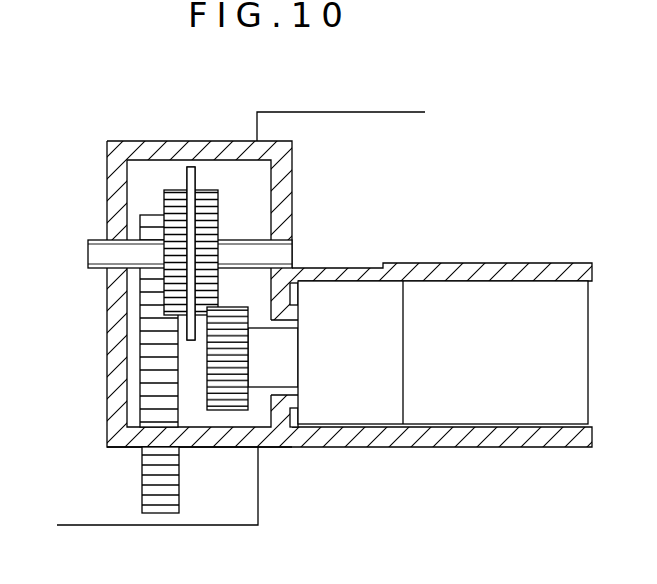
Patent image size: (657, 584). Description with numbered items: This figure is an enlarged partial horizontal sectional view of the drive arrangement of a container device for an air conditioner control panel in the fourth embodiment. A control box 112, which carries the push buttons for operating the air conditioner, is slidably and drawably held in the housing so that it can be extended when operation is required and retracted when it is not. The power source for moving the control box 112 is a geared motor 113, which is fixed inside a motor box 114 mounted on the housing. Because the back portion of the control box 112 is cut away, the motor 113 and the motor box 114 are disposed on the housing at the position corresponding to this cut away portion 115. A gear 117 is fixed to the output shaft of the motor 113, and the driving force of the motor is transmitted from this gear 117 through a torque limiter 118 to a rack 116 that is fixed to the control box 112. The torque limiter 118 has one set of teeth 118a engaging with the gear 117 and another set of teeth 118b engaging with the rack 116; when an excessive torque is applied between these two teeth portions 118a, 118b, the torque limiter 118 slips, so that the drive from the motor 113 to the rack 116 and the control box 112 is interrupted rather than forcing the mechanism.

The control box 112 is at (240, 498).
The geared motor 113 is at (462, 403).
The motor box 114 is at (500, 240).
The cut away portion 115 is at (259, 477).
The rack 116 is at (158, 511).
The gear 117 is at (218, 410).
The torque limiter 118 is at (220, 217).
The teeth 118a is at (205, 190).
The teeth 118b is at (175, 192).